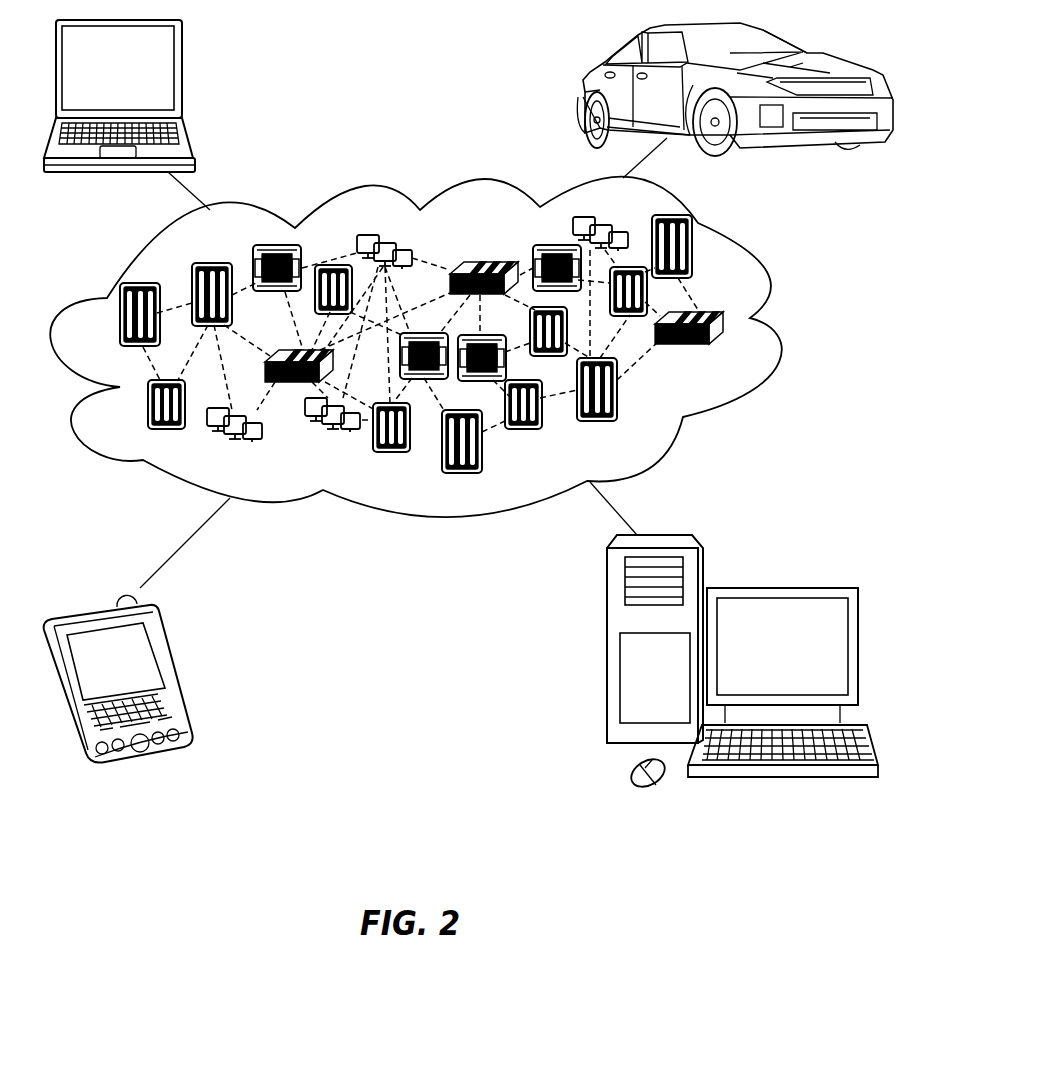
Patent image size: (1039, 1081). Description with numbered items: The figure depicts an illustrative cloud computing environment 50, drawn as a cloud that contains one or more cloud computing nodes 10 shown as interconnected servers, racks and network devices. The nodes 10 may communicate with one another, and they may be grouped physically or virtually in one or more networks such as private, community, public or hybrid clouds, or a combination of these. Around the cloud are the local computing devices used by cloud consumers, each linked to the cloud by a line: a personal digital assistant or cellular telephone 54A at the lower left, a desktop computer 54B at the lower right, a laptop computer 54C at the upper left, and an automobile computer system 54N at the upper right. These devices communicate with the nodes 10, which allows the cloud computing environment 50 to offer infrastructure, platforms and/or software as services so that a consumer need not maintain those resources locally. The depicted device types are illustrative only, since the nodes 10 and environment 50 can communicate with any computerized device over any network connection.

The cloud computing node 10 is at (770, 365).
The cloud computing environment 50 is at (781, 327).
The personal digital assistant or cellular telephone 54A is at (172, 677).
The desktop computer 54B is at (780, 588).
The laptop computer 54C is at (182, 74).
The automobile computer system 54N is at (582, 94).